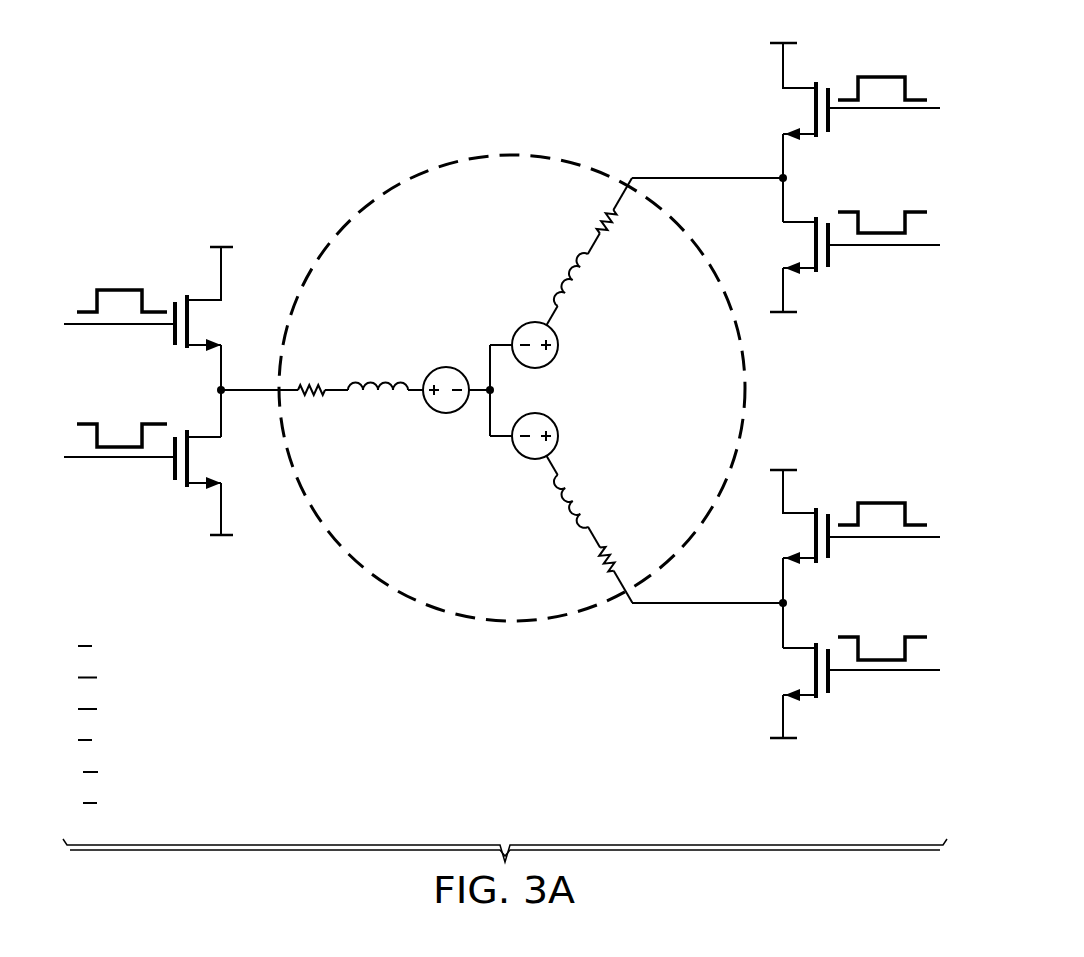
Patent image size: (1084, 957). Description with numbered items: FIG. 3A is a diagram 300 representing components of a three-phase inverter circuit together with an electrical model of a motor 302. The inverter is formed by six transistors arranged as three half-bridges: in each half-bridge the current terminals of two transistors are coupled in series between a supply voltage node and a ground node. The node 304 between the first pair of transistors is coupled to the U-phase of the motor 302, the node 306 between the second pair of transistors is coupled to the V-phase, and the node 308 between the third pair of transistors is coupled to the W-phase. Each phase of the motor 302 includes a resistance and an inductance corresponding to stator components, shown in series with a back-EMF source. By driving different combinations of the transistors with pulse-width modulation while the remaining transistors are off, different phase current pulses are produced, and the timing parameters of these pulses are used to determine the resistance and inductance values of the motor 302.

The motor drive system 300 is at (243, 90).
The motor 302 is at (393, 184).
The node between Q1 and Q2 304 is at (218, 389).
The node between Q3 and Q4 306 is at (790, 176).
The node between Q5 and Q6 308 is at (790, 602).